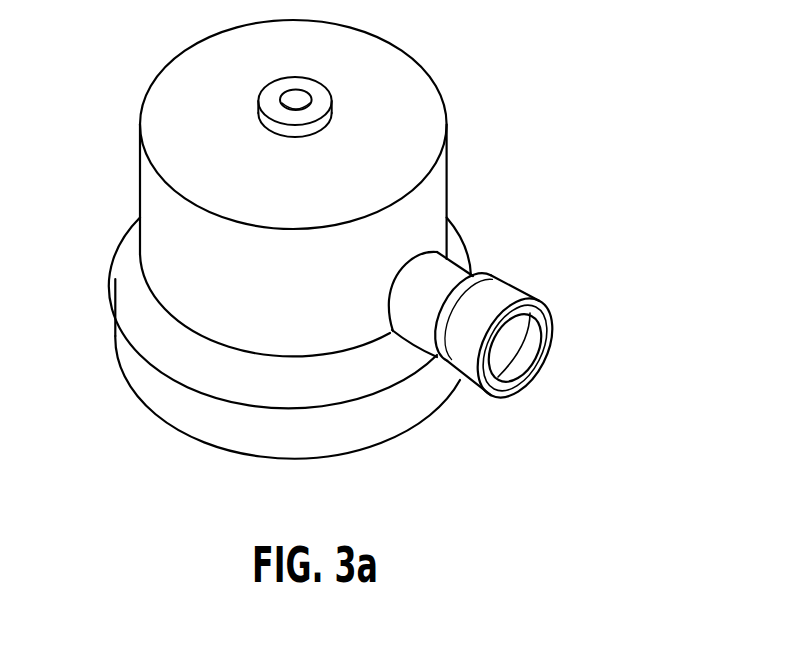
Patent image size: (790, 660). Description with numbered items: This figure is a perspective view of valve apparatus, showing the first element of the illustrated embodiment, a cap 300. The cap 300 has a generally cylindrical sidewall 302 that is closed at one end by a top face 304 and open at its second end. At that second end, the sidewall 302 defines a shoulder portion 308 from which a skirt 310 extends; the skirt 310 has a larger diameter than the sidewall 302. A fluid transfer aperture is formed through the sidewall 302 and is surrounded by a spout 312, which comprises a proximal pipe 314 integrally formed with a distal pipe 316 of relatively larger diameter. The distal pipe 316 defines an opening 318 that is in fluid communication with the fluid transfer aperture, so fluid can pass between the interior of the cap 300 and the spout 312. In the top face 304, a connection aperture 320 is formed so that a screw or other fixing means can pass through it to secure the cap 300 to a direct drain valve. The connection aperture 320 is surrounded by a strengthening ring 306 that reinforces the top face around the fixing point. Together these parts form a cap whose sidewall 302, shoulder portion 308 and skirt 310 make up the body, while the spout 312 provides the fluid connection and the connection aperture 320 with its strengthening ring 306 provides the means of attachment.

The cap 300 is at (571, 45).
The sidewall 302 is at (447, 193).
The top face 304 is at (393, 60).
The strengthening ring 306 is at (290, 82).
The shoulder portion 308 is at (133, 275).
The skirt 310 is at (123, 333).
The spout 312 is at (553, 280).
The port neck 314 is at (448, 270).
The distal pipe 316 is at (500, 290).
The opening 318 is at (532, 367).
The connection aperture 320 is at (283, 105).